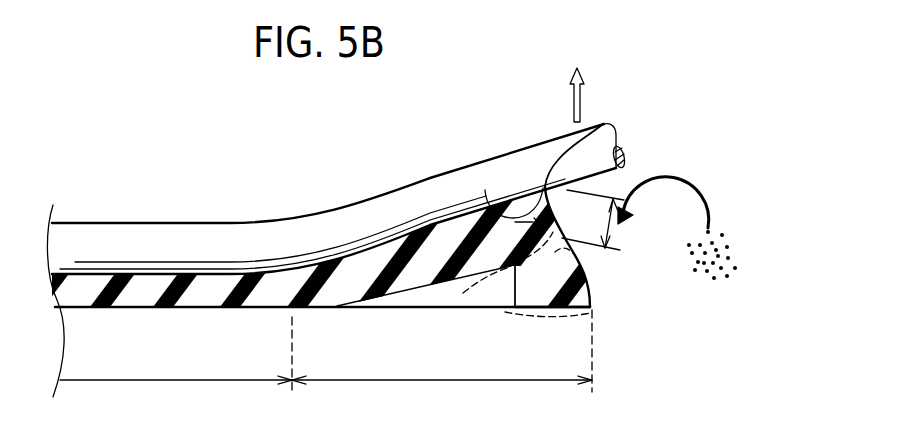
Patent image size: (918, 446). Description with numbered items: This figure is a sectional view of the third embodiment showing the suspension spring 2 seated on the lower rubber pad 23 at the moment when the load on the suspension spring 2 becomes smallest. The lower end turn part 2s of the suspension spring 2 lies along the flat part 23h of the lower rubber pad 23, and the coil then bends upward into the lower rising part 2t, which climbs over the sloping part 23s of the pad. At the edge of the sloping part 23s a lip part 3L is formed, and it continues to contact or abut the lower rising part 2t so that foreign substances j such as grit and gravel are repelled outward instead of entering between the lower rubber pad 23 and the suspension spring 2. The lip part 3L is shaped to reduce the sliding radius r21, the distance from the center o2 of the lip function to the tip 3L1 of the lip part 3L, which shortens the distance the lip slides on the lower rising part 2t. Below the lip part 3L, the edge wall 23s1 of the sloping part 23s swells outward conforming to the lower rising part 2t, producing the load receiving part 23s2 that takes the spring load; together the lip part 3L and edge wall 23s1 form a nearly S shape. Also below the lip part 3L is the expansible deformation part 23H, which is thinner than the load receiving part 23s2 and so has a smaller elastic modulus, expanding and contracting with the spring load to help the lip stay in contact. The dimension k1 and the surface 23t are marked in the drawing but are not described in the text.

The suspension spring 2 is at (348, 203).
The lower end turn part 2s is at (142, 228).
The lower rising part 2t is at (503, 163).
The center of lip function o2 is at (485, 190).
The lip part 3L is at (543, 186).
The tip of lip part 3L1 is at (608, 122).
The sliding radius r21 is at (621, 196).
The gap distance k1 is at (612, 235).
The foreign substances j is at (738, 253).
The lower rubber pad 23 is at (181, 310).
The expansible deformation part 23H is at (468, 296).
The bottom surface of tip 23t is at (531, 308).
The load receiving part 23s2 is at (548, 309).
The edge wall 23s1 is at (590, 296).
The flat part 23h is at (176, 366).
The sloping part 23s is at (442, 362).